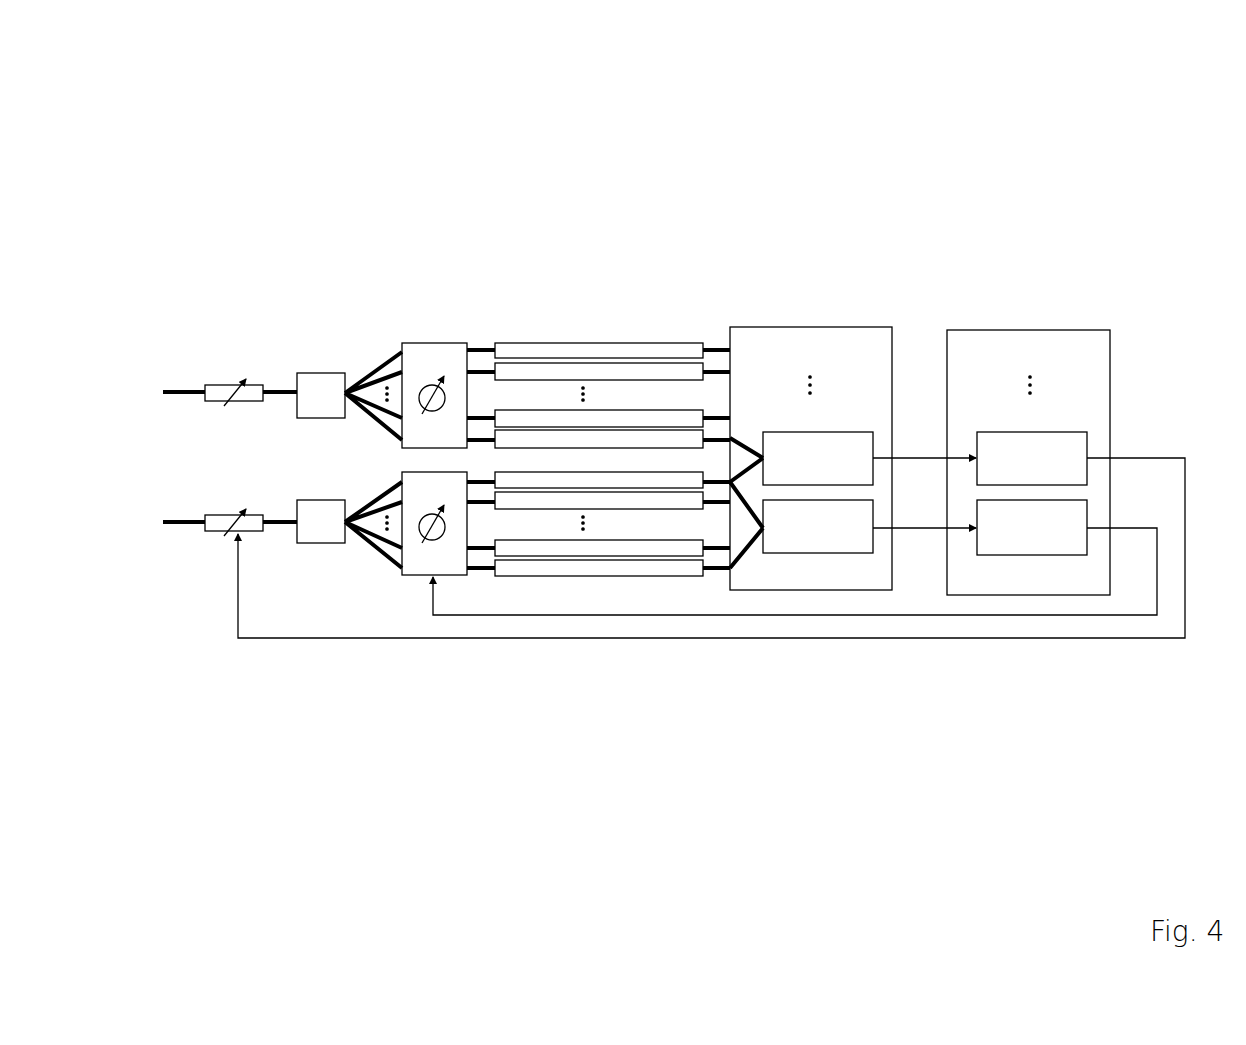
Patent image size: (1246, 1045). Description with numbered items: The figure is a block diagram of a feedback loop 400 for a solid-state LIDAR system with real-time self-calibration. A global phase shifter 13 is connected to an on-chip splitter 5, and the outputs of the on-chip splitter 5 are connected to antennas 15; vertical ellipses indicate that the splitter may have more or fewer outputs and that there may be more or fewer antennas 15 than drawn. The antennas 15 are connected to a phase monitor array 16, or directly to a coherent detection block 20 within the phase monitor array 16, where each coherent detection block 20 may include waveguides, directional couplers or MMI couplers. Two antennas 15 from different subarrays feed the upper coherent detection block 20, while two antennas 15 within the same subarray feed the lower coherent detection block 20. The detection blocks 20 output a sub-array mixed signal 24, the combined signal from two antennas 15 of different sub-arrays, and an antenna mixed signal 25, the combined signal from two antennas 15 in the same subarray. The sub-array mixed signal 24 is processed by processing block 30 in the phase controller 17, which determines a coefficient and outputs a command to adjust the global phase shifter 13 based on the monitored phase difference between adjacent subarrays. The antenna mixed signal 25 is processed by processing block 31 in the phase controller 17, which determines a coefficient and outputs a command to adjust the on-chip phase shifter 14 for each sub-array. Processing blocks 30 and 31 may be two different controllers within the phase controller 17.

The feedback loop 400 is at (1141, 50).
The on-chip splitter 5 is at (318, 372).
The global phase shifter 13 is at (203, 520).
The on-chip phase shifter 14 is at (393, 576).
The antennas 15 is at (592, 348).
The phase monitor array 16 is at (806, 413).
The phase controller 17 is at (1024, 416).
The coherent detection block 20 is at (803, 474).
The sub-array mixed signal 24 is at (924, 440).
The antenna mixed signal 25 is at (924, 510).
The processing block 30 is at (1017, 474).
The processing block 31 is at (1017, 543).